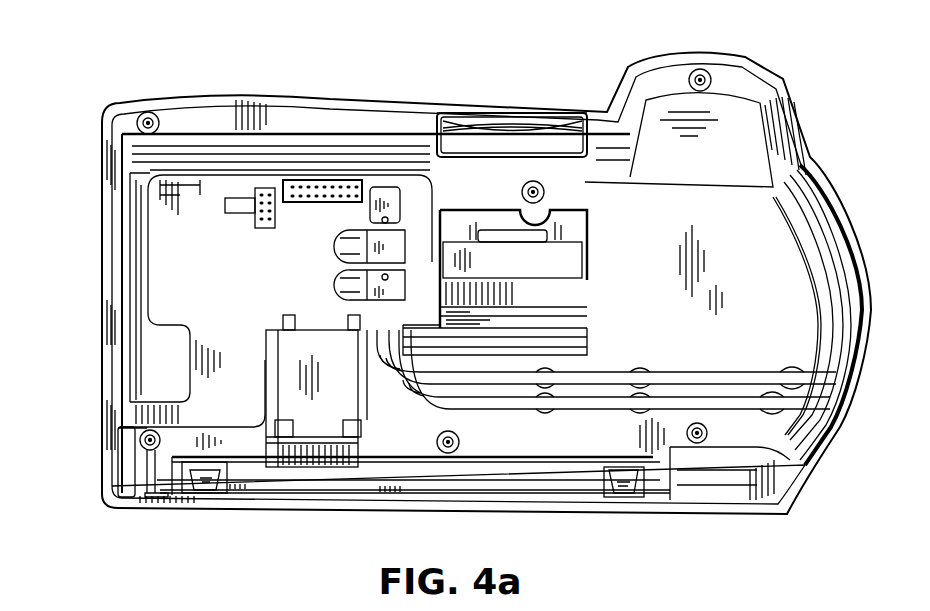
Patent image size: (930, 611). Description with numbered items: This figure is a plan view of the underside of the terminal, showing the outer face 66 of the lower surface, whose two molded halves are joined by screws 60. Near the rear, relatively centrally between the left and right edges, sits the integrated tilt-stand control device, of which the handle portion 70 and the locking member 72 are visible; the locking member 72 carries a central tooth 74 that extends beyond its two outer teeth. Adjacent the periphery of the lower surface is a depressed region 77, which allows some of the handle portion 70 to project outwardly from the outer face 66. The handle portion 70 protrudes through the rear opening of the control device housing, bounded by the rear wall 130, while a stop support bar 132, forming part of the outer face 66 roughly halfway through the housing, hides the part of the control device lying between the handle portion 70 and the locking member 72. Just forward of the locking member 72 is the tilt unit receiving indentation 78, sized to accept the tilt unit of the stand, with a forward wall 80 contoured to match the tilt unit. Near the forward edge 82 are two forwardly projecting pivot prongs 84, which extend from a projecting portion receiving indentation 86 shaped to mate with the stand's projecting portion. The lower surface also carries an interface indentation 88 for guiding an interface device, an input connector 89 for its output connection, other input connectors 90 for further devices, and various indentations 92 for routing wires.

The screws 60 is at (148, 110).
The outer face of the lower surface 66 is at (88, 366).
The handle portion 70 is at (464, 140).
The locking member 72 is at (557, 253).
The central tooth 74 is at (513, 280).
The depressed region 77 is at (297, 107).
The tilt unit receiving indentation 78 is at (577, 287).
The forward wall 80 is at (580, 303).
The forward edge 82 is at (745, 514).
The pivot prongs 84 is at (206, 492).
The projecting portion receiving indentation 86 is at (318, 474).
The interface indentation 88 is at (323, 340).
The input connector 89 is at (329, 185).
The input connectors 90 is at (390, 186).
The indentations 92 is at (740, 396).
The rear wall 130 is at (538, 113).
The stop support bar 132 is at (548, 197).